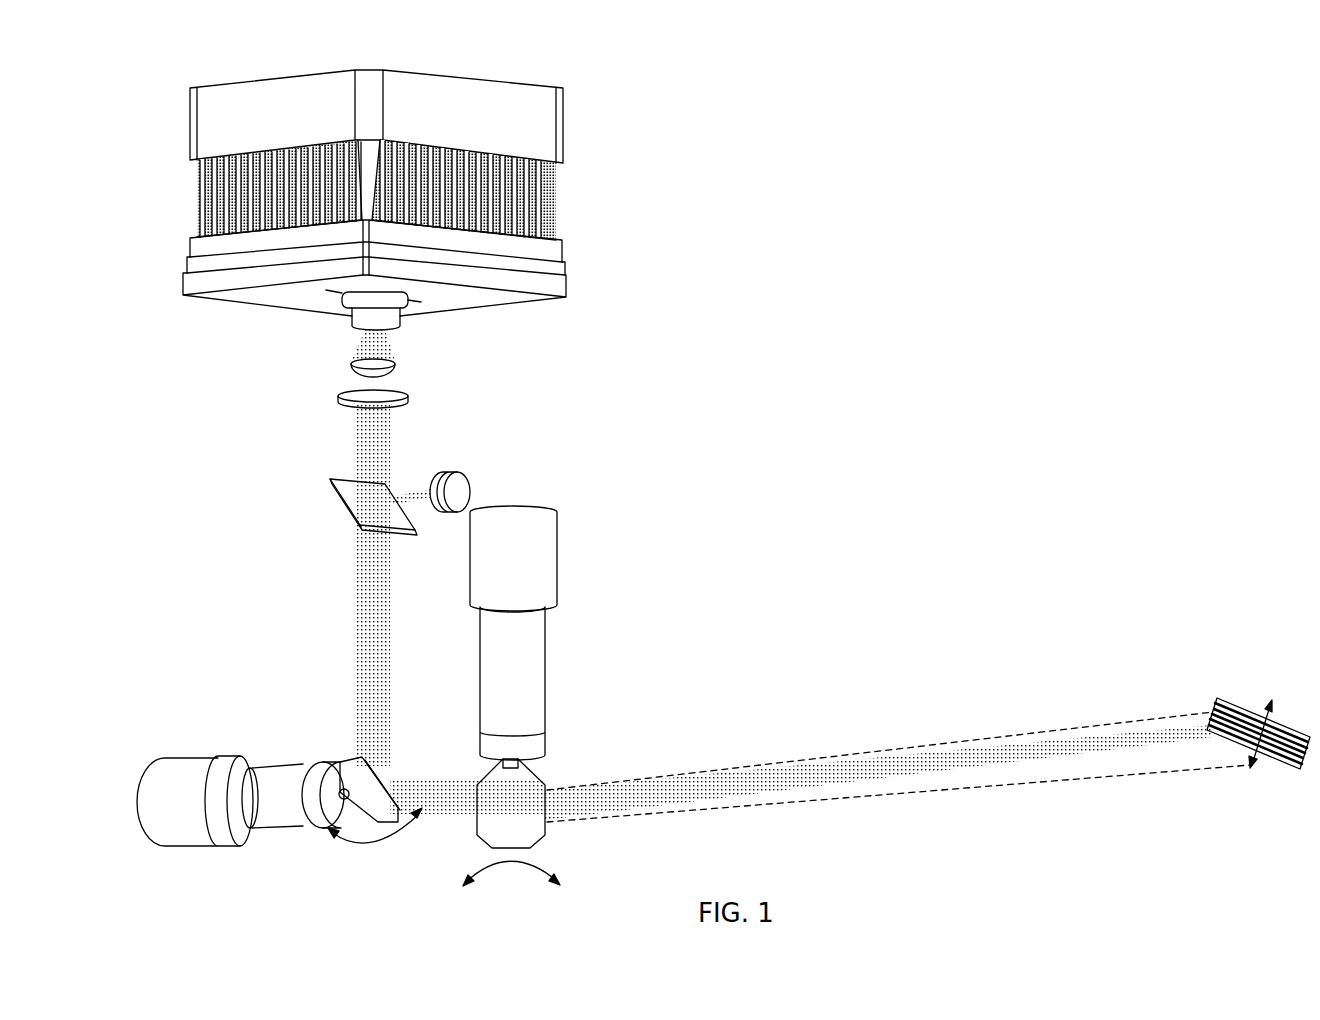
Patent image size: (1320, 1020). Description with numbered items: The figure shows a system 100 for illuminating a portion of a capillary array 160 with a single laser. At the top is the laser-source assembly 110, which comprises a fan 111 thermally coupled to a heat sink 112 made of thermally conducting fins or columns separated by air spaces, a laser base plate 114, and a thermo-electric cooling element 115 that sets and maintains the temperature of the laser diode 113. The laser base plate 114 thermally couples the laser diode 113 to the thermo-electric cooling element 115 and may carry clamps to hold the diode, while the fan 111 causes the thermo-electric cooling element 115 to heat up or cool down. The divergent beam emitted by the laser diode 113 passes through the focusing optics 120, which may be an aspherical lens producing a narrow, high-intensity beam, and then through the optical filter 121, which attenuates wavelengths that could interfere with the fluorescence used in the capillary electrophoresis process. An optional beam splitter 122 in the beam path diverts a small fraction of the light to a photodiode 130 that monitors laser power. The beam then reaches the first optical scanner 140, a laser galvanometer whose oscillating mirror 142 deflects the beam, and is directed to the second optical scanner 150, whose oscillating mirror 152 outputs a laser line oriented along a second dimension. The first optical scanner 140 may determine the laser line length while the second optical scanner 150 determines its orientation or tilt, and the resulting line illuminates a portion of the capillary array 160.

The system 100 is at (666, 35).
The laser-source assembly 110 is at (581, 89).
The fan 111 is at (210, 133).
The heat sink 112 is at (213, 200).
The laser diode 113 is at (352, 317).
The laser base plate 114 is at (185, 292).
The thermo-electric cooling (TEC) element 115 is at (568, 278).
The focusing optics 120 is at (397, 367).
The optical filter 121 is at (410, 398).
The beam splitter 122 is at (330, 481).
The photodiode 130 is at (462, 490).
The first optical scanner 140 is at (186, 750).
The oscillating mirror 142 is at (376, 810).
The second optical scanner 150 is at (570, 546).
The oscillating mirror 152 is at (523, 782).
The capillary array 160 is at (1238, 705).